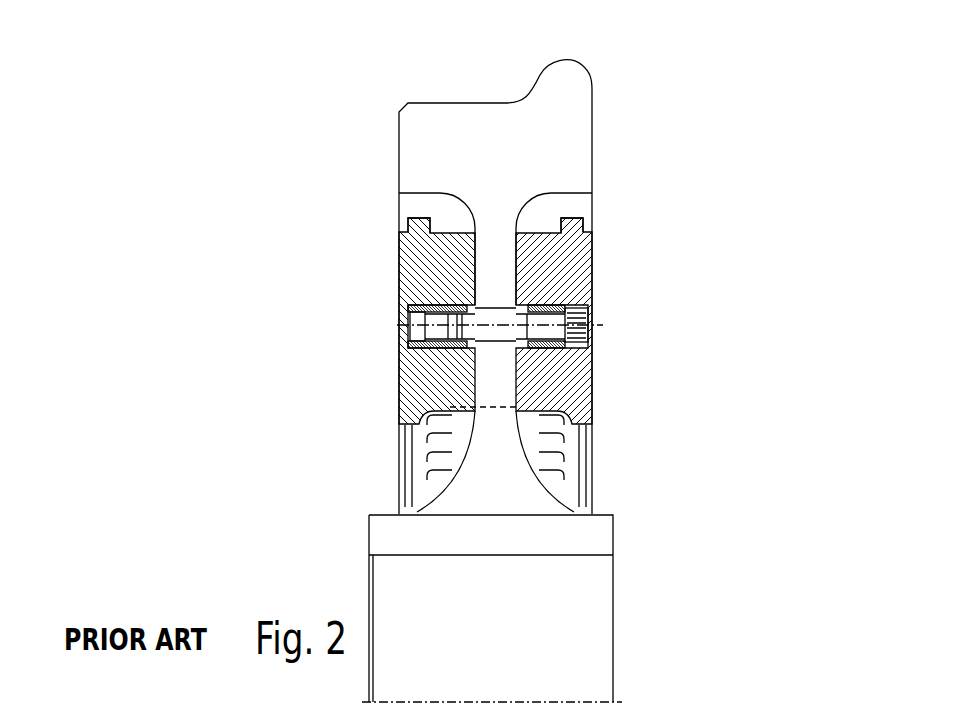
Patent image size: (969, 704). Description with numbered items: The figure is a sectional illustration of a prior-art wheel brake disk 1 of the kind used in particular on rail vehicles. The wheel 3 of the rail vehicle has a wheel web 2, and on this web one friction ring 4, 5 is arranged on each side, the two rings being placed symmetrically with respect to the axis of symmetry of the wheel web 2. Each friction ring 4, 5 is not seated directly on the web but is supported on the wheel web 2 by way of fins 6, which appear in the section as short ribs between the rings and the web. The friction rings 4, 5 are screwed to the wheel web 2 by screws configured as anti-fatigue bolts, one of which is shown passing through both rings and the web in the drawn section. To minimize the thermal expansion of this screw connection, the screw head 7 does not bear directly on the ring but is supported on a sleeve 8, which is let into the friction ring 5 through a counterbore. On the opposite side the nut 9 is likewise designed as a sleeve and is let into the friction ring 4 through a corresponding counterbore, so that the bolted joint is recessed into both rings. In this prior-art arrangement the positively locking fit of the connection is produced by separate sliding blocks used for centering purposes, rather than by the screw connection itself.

The wheel brake disk 1 is at (722, 72).
The wheel web 2 is at (490, 252).
The wheel 3 is at (390, 146).
The friction ring 4 is at (422, 258).
The friction ring 5 is at (577, 257).
The fins 6 is at (450, 245).
The screw head 7 is at (573, 333).
The sleeve 8 is at (547, 343).
The nut 9 is at (408, 340).